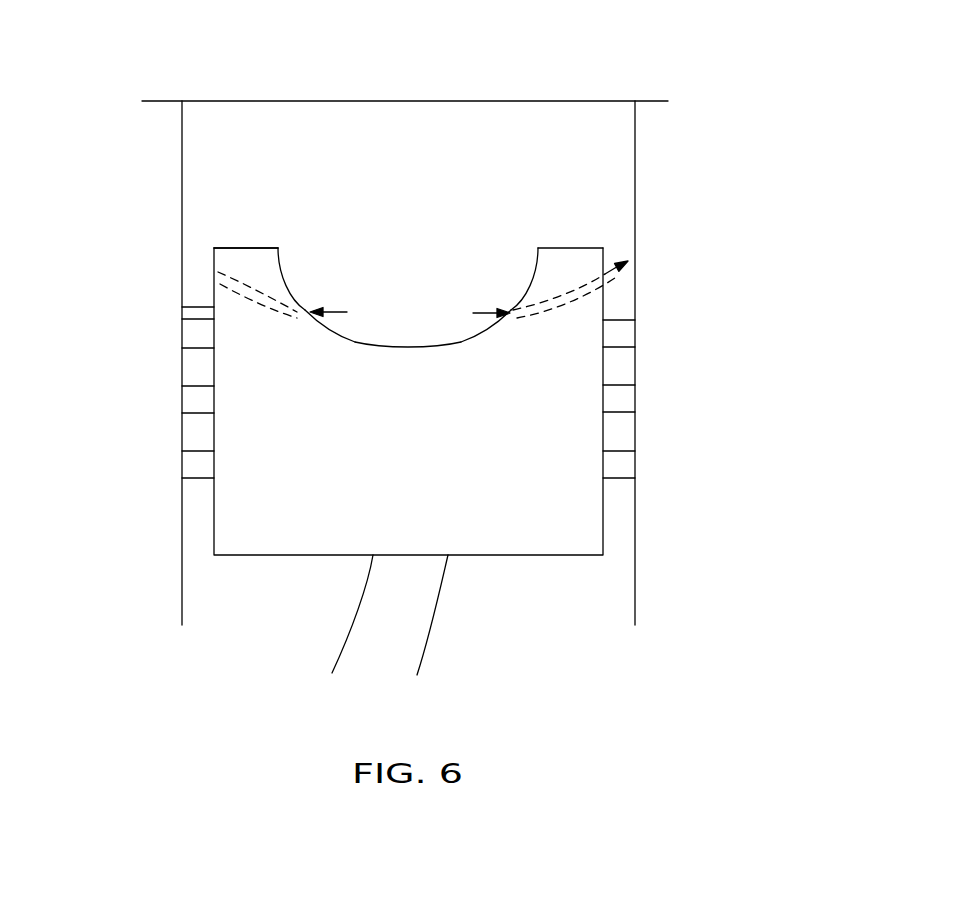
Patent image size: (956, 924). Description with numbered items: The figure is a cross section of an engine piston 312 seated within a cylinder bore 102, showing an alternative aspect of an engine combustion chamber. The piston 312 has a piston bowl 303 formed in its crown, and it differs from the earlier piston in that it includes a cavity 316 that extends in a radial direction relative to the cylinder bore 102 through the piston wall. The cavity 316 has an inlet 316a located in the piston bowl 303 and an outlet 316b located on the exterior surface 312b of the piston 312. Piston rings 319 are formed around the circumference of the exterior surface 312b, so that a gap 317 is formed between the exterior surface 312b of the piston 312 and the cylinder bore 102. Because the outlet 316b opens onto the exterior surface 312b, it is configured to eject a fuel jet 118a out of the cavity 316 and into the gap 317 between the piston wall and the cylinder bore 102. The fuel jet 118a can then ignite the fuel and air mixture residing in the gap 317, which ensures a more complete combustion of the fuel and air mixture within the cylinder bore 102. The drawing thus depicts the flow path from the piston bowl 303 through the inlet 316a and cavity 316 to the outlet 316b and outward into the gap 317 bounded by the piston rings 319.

The cylinder bore 102 is at (183, 143).
The piston bowl 303 is at (426, 345).
The piston 312 is at (243, 504).
The exterior surface 312b is at (213, 308).
The cavity 316 is at (253, 293).
The inlet 316a is at (307, 313).
The outlet 316b is at (220, 276).
The gap 317 is at (197, 246).
The fuel jet 118a is at (200, 269).
The piston rings 319 is at (193, 330).